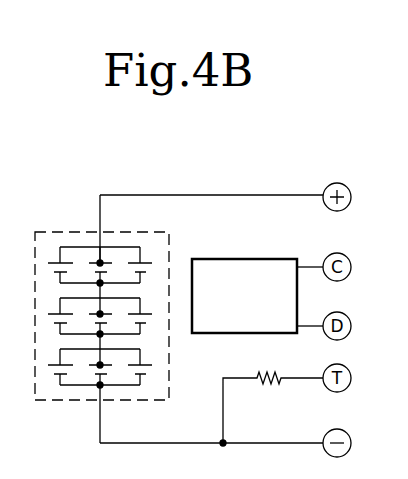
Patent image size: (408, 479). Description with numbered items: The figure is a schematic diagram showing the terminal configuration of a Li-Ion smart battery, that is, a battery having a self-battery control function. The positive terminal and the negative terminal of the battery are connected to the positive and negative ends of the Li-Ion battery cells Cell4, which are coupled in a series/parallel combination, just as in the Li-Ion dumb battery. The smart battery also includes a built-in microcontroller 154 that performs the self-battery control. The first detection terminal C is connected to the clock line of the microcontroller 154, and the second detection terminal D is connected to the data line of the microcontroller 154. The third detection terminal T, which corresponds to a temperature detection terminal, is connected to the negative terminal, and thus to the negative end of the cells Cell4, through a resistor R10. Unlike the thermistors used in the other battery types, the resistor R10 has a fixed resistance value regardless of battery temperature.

The microcontroller 154 is at (268, 259).
The resistor R10 is at (273, 407).
The Li-Ion battery cells Cell4 is at (63, 232).